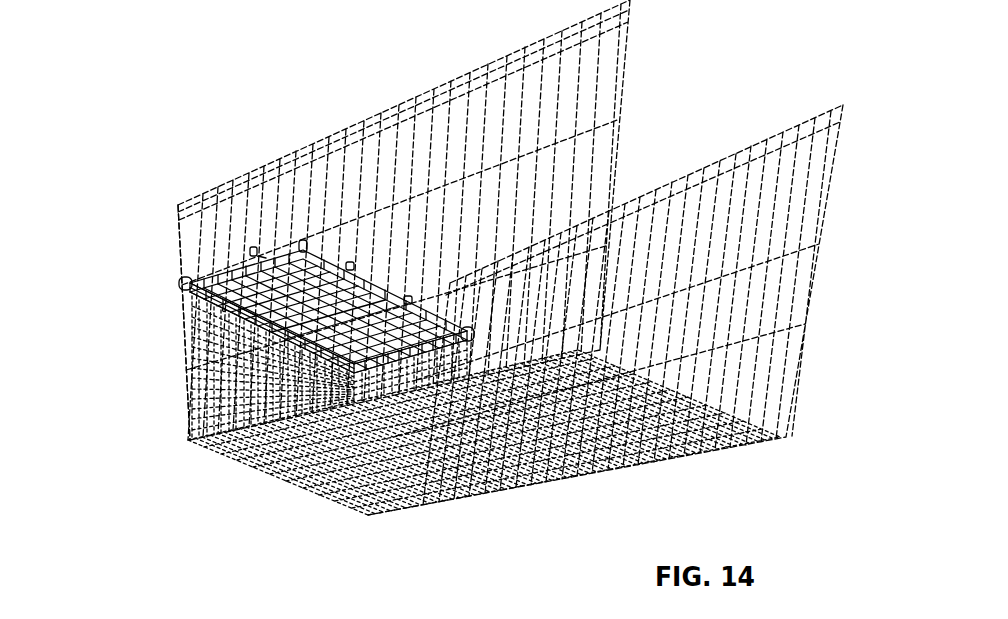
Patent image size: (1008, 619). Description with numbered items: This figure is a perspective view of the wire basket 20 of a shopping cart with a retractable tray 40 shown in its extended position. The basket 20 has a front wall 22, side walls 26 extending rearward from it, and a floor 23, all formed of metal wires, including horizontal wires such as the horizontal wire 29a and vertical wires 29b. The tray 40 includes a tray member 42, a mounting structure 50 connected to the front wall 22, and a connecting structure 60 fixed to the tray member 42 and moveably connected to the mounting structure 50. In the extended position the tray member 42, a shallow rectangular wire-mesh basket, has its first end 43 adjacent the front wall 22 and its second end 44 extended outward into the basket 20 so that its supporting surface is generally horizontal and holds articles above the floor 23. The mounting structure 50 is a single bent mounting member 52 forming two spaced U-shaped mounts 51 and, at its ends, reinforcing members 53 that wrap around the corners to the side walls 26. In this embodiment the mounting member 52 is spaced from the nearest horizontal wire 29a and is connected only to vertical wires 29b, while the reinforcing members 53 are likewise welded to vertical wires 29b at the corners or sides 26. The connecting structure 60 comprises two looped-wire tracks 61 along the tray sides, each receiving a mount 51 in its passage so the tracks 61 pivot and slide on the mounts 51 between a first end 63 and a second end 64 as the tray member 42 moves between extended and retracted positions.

The basket 20 is at (461, 293).
The front wall 22 is at (290, 368).
The floor 23 is at (690, 418).
The side walls 26 is at (540, 107).
The horizontal wire 29a is at (225, 310).
The vertical wires 29b is at (190, 257).
The retractable tray 40 is at (326, 285).
The tray member 42 is at (408, 302).
The first end 43 is at (305, 352).
The second end 44 is at (350, 268).
The mounting structure 50 is at (355, 368).
The mounts 51 is at (192, 291).
The mounting member 52 is at (272, 344).
The reinforcing members 53 is at (181, 278).
The connecting structure 60 is at (255, 255).
The tracks 61 is at (303, 243).
The first end 63 is at (368, 378).
The second end 64 is at (263, 257).